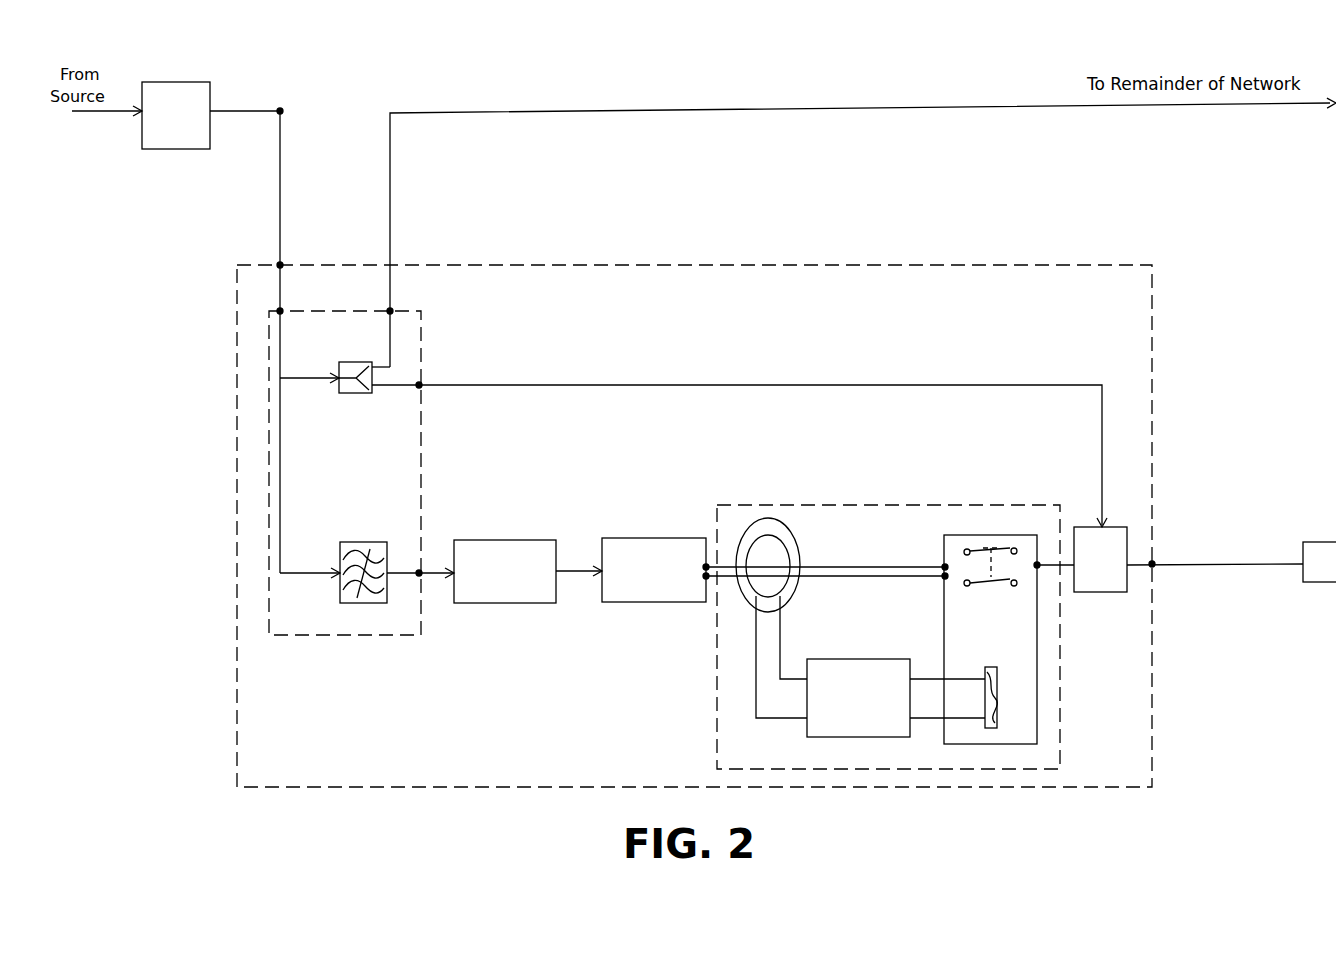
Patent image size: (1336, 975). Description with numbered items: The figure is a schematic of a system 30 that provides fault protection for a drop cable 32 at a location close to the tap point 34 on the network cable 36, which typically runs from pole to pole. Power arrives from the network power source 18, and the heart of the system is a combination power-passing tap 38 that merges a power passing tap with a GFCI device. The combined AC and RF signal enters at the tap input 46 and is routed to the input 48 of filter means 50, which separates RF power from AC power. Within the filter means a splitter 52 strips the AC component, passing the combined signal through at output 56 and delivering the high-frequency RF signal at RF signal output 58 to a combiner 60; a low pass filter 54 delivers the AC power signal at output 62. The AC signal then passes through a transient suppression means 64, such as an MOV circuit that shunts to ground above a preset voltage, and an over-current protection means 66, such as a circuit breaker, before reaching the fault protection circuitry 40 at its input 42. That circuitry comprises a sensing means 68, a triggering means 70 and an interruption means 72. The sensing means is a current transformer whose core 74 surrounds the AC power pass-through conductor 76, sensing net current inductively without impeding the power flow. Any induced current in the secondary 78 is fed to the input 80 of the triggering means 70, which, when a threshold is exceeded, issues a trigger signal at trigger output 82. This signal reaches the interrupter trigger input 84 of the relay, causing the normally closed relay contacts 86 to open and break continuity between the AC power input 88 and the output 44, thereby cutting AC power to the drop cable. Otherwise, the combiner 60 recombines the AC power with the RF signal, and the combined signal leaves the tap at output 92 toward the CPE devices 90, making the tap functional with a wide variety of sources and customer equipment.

The network power source 18 is at (192, 82).
The system 30 is at (727, 38).
The drop cable 32 is at (1257, 564).
The tap point 34 is at (283, 97).
The network cable 36 is at (537, 112).
The combination power-passing tap 38 is at (520, 265).
The fault protection circuitry 40 is at (762, 506).
The input 42 is at (713, 589).
The output 44 is at (1041, 575).
The input 46 is at (300, 246).
The input 48 is at (290, 303).
The filter means 50 is at (413, 311).
The splitter 52 is at (357, 394).
The low pass filter 54 is at (365, 542).
The output 56 is at (382, 319).
The RF signal output 58 is at (429, 373).
The combiner 60 is at (1125, 592).
The output 62 is at (429, 559).
The transient suppression means 64 is at (480, 540).
The over-current protection means 66 is at (622, 538).
The sensing means 68 is at (789, 568).
The triggering means 70 is at (823, 659).
The interruption means 72 is at (938, 587).
The core 74 is at (800, 565).
The AC power pass-through conductor 76 is at (865, 566).
The secondary 78 is at (756, 637).
The input 80 is at (800, 729).
The trigger output 82 is at (923, 701).
The interrupter trigger input 84 is at (955, 697).
The relay contacts 86 is at (1015, 595).
The AC power input 88 is at (990, 604).
The CPE devices 90 is at (1316, 582).
The output 92 is at (1168, 553).